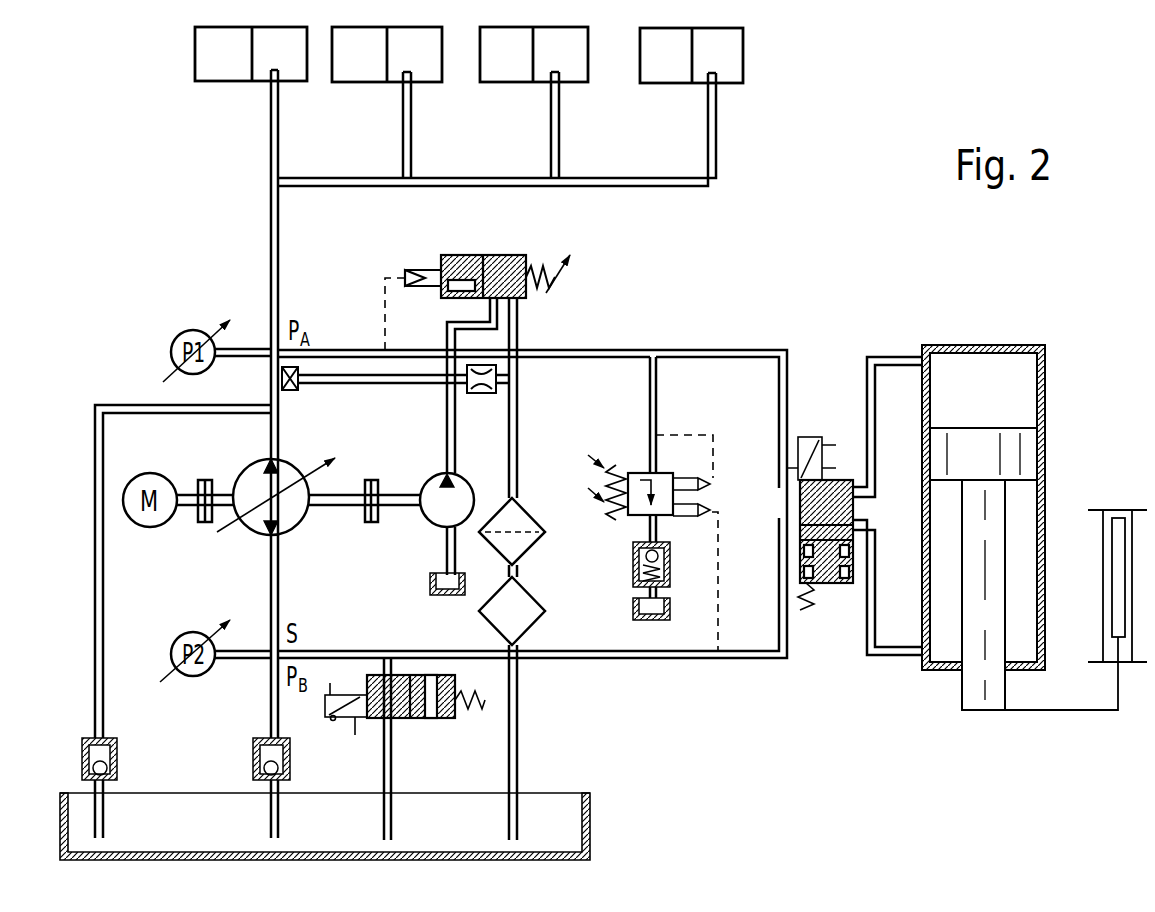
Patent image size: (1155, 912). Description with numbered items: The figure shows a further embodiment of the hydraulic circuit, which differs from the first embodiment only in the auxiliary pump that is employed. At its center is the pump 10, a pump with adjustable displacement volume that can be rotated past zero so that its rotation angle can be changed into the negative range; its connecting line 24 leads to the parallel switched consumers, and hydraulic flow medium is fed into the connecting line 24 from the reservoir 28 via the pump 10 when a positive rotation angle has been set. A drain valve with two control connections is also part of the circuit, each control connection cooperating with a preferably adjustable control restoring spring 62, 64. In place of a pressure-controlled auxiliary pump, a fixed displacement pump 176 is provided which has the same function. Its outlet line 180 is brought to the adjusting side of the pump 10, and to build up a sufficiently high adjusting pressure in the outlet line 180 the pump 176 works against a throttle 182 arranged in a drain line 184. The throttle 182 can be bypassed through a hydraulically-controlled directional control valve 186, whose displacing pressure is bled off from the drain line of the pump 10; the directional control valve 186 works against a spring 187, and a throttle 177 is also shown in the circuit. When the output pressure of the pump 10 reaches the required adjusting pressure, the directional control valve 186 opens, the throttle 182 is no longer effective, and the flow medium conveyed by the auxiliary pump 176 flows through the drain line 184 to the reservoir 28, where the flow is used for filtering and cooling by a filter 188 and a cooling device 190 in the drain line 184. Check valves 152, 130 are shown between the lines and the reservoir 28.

The pump 10 is at (242, 461).
The connecting line 24 is at (271, 248).
The reservoir 28 is at (567, 822).
The control restoring spring 62 is at (618, 478).
The control restoring spring 64 is at (614, 520).
The check valve 130 is at (293, 765).
The check valve 152 is at (122, 762).
The fixed displacement pump 176 is at (424, 526).
The throttle 177 is at (292, 392).
The outlet line 180 is at (447, 432).
The throttle 182 is at (492, 393).
The drain line 184 is at (520, 458).
The directional control valve 186 is at (470, 254).
The spring 187 is at (560, 288).
The filter 188 is at (520, 548).
The cooling device 190 is at (518, 615).